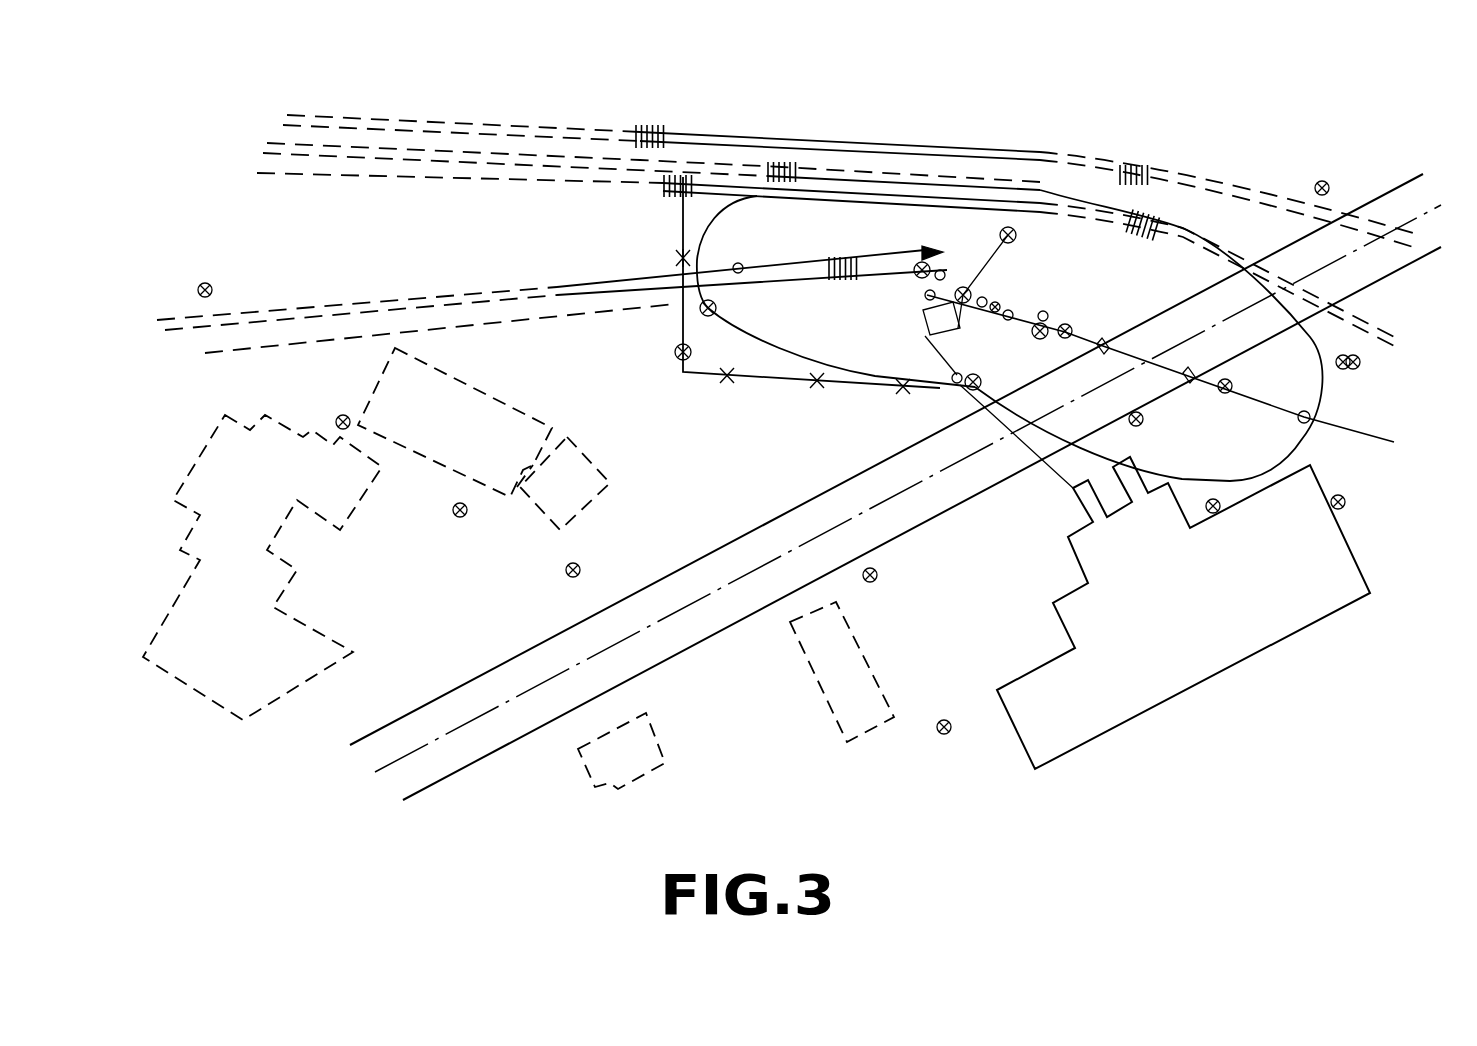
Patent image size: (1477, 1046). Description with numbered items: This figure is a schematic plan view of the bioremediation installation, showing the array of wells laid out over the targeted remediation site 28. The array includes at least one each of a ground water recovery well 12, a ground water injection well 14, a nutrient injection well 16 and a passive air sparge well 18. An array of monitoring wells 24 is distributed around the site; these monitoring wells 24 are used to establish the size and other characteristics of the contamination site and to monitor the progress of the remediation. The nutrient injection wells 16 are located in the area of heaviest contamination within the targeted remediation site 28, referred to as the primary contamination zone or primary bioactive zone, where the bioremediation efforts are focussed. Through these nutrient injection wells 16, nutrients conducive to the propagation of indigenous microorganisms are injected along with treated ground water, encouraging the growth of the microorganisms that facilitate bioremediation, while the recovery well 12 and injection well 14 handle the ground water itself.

The ground water recovery well 12 is at (1040, 339).
The ground water injection well 14 is at (742, 264).
The nutrient injection well 16 is at (985, 300).
The passive air sparge well 18 is at (928, 296).
The monitoring well 24 is at (340, 418).
The targeted remediation site 28 is at (1224, 212).